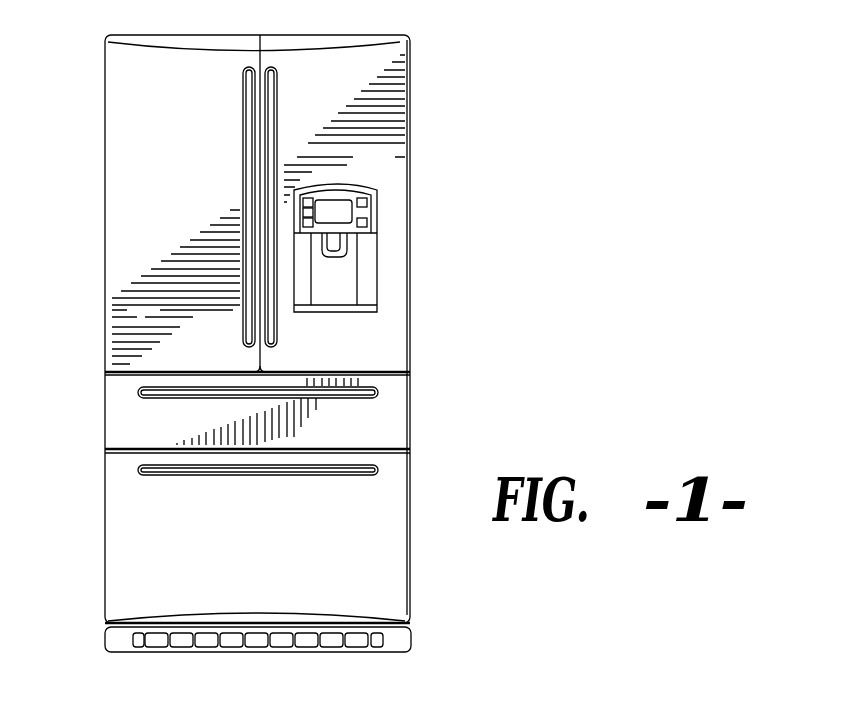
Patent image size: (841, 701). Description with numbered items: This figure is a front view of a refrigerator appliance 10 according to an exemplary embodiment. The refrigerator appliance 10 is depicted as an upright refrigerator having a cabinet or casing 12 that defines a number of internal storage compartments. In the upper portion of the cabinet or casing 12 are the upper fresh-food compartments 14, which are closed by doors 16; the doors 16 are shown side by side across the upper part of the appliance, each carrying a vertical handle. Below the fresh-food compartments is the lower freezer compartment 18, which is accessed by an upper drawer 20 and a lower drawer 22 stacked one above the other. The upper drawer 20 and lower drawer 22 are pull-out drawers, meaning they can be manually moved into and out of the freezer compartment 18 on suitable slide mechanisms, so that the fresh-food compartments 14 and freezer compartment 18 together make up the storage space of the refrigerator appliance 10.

The refrigerator appliance 10 is at (464, 123).
The cabinet or casing 12 is at (411, 287).
The upper fresh-food compartments 14 is at (142, 177).
The doors 16 is at (170, 257).
The lower freezer compartment 18 is at (378, 418).
The upper drawer 20 is at (160, 437).
The lower drawer 22 is at (275, 556).